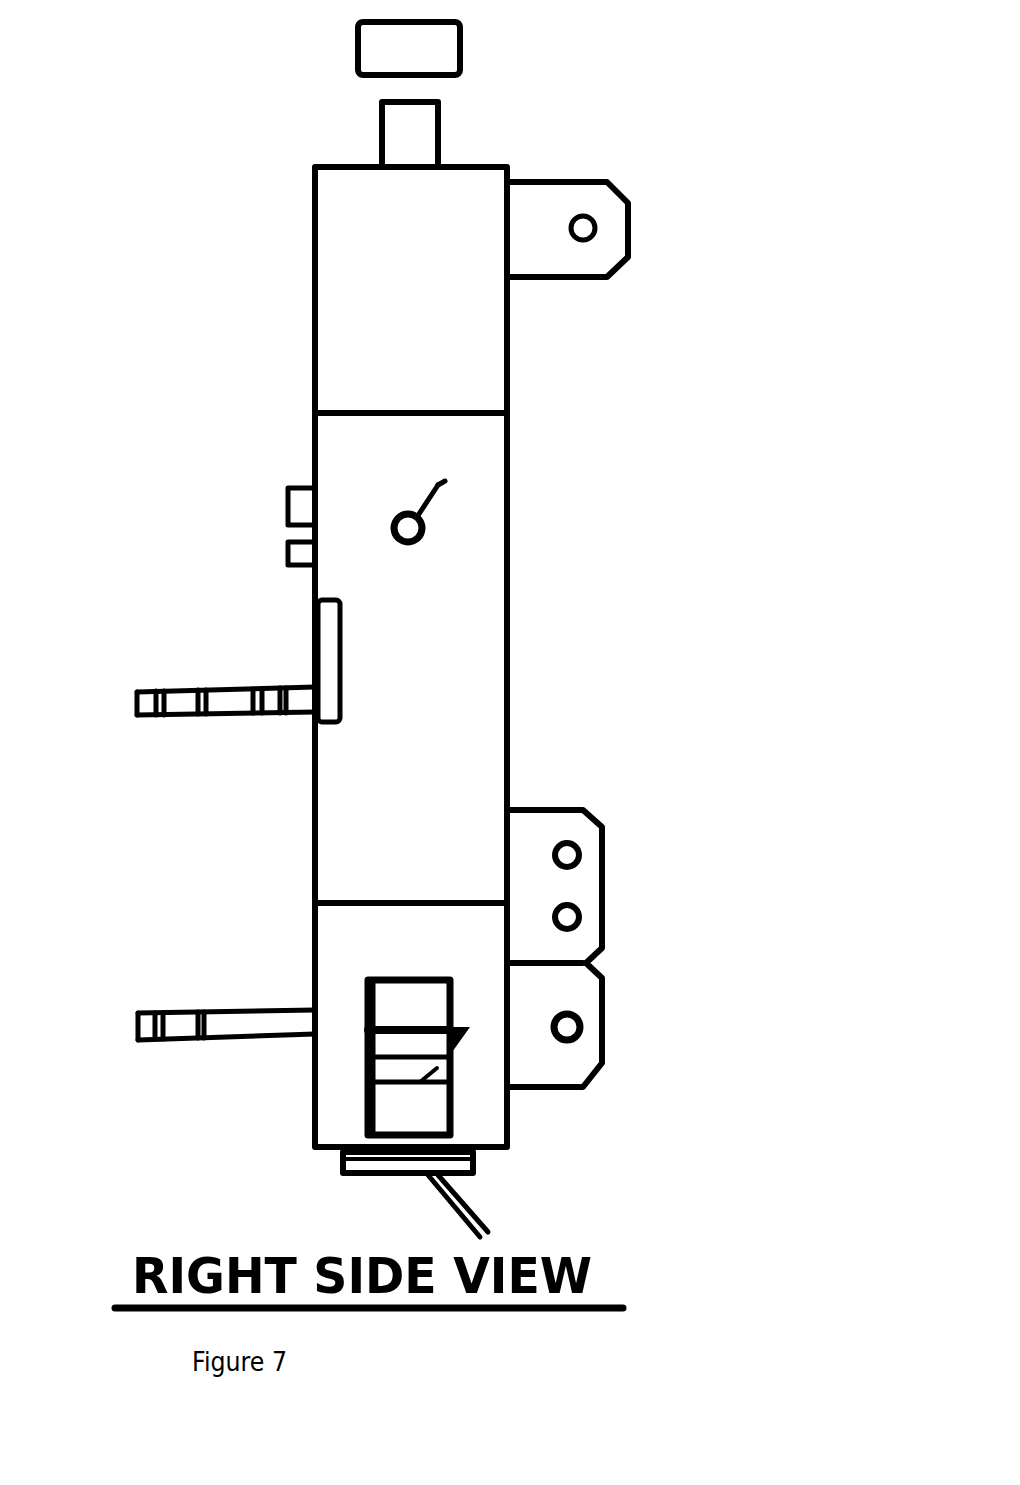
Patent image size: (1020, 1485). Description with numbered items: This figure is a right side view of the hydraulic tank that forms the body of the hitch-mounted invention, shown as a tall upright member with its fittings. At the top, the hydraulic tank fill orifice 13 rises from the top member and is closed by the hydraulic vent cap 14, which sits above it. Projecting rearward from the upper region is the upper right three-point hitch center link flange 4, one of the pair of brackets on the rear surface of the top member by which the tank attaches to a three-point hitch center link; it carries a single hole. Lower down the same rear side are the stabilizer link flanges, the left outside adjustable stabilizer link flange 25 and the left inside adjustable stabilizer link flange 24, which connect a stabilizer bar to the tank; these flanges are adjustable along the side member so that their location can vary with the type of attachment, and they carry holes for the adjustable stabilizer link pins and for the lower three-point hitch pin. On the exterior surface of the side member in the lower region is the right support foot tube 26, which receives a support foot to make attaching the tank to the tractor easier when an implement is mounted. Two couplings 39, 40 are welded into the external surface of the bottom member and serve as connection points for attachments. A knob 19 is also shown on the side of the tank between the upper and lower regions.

The upper right three-point hitch center link flange 4 is at (650, 231).
The hydraulic tank fill orifice 13 is at (460, 127).
The hydraulic vent cap 14 is at (485, 57).
The knob 19 is at (421, 538).
The left inside adjustable stabilizer link flange 24 is at (627, 852).
The left outside adjustable stabilizer link flange 25 is at (575, 1020).
The right support foot tube 26 is at (375, 1095).
The coupling 39 is at (279, 558).
The coupling 40 is at (280, 506).